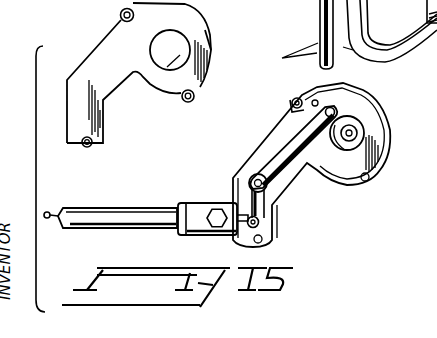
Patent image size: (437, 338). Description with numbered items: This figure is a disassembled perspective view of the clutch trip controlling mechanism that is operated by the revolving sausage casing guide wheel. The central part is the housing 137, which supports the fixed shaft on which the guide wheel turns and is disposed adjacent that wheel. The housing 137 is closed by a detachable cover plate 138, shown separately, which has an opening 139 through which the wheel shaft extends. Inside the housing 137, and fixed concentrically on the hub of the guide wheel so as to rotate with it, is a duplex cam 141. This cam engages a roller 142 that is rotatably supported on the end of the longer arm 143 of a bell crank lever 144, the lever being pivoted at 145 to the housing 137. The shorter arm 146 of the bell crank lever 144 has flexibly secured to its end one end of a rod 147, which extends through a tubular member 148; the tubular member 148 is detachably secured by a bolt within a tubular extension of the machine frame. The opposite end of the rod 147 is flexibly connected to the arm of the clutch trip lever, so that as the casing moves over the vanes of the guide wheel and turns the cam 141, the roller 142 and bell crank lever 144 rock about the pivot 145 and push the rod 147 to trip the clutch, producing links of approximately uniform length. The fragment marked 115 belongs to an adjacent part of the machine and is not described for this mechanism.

The bar 115 is at (307, 34).
The housing 137 is at (265, 150).
The detachable cover plate 138 is at (205, 43).
The opening 139 is at (170, 72).
The duplex cam 141 is at (351, 131).
The roller 142 is at (333, 110).
The longer arm 143 is at (290, 118).
The bell crank lever 144 is at (323, 165).
The pivot 145 is at (249, 183).
The shorter arm 146 is at (272, 210).
The rod 147 is at (63, 232).
The tubular member 148 is at (163, 197).